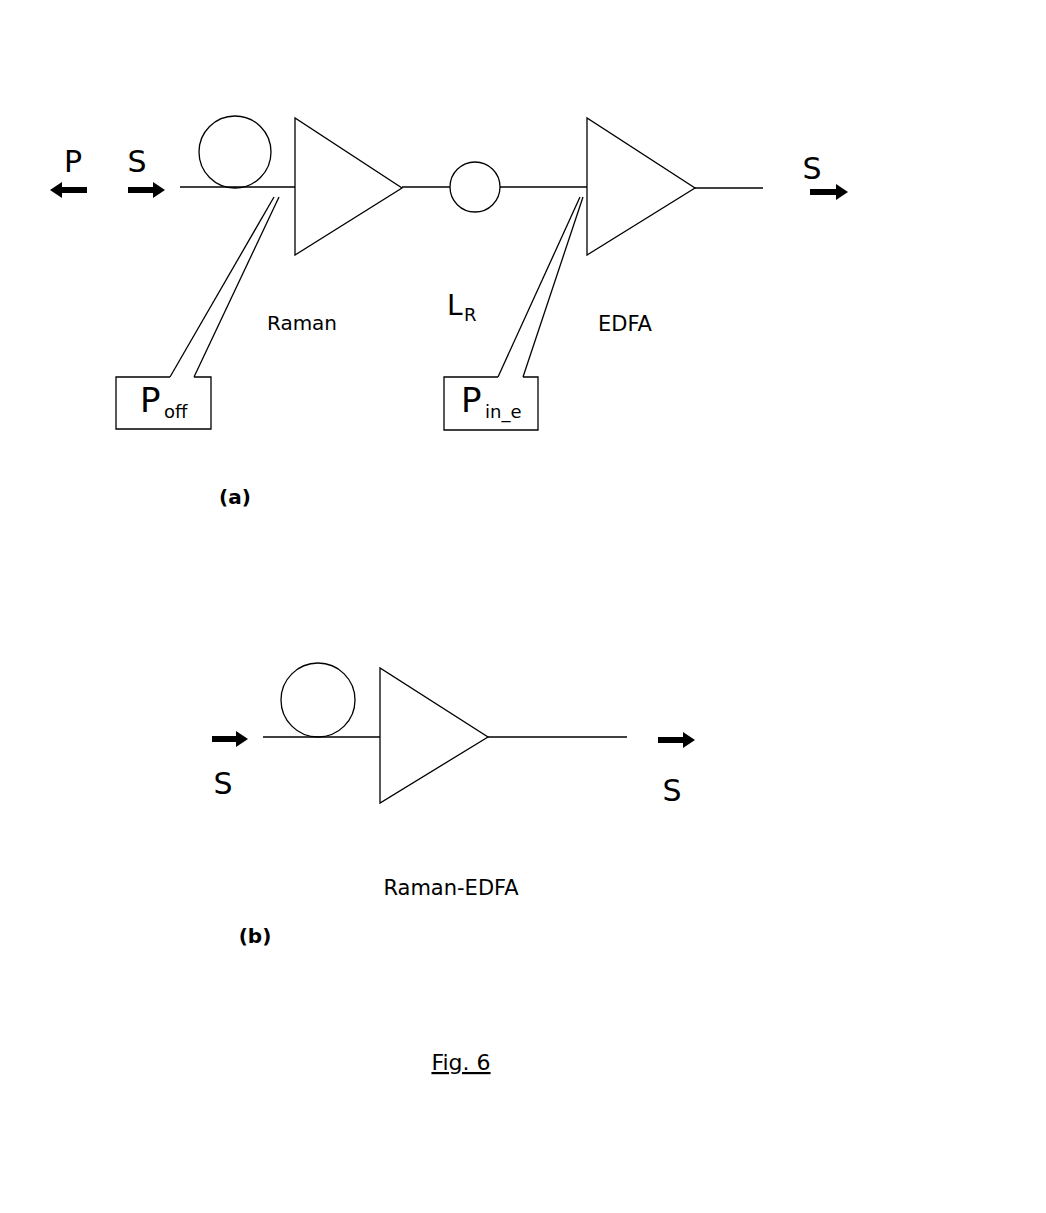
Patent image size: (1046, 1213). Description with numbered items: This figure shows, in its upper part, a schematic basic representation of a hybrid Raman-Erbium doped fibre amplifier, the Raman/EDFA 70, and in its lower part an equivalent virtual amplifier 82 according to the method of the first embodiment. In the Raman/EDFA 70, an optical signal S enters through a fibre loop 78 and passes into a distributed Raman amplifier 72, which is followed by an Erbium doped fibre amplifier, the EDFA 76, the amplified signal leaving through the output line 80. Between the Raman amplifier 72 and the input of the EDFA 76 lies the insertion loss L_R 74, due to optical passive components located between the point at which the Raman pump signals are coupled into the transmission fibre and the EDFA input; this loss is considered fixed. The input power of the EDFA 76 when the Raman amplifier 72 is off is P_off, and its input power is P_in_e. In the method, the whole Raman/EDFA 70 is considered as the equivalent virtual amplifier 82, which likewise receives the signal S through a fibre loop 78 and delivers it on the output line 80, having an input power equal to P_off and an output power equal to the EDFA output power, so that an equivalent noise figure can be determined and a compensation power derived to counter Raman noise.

The Raman/EDFA 70 is at (556, 60).
The Raman amplifier 72 is at (342, 153).
The insertion loss L_R 74 is at (478, 177).
The EDFA 76 is at (637, 153).
The input signal fiber loop 78 is at (237, 118).
The output line 80 is at (733, 190).
The equivalent virtual amplifier 82 is at (430, 703).